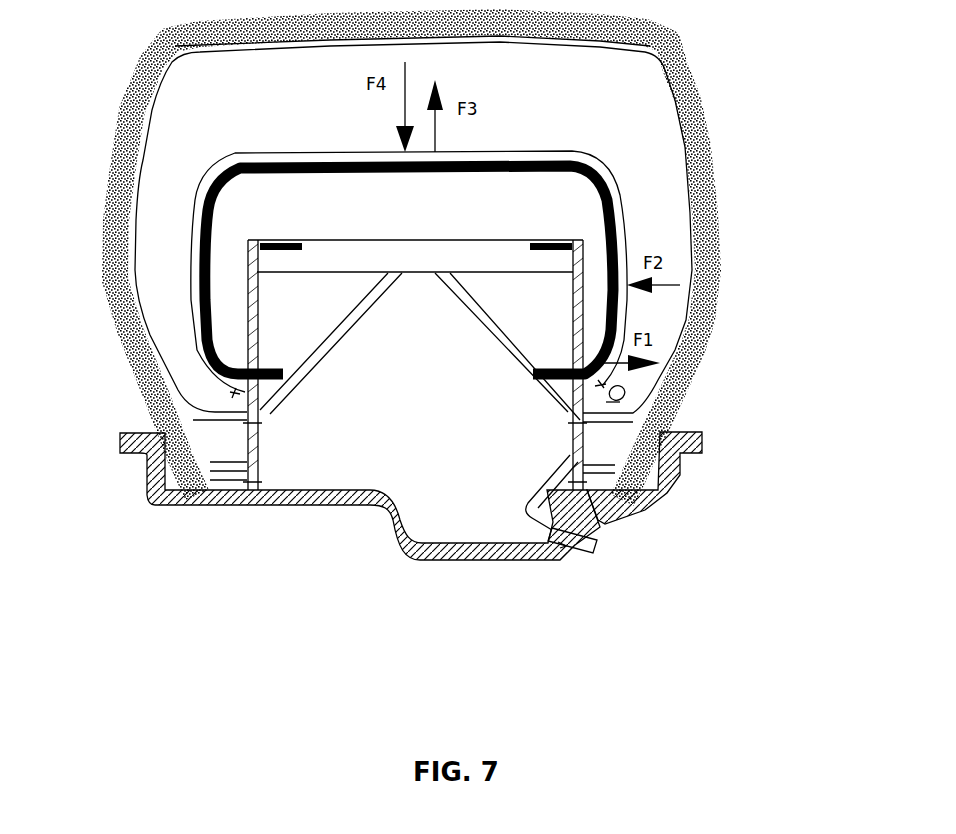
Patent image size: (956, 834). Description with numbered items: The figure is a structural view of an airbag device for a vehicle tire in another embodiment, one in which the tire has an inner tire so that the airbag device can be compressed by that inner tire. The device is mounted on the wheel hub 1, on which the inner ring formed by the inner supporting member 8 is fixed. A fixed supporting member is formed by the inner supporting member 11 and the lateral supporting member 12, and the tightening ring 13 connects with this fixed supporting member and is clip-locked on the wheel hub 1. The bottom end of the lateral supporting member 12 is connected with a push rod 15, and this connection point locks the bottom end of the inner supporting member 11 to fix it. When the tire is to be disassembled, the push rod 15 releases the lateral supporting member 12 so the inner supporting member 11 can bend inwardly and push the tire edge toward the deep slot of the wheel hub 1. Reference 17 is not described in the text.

The wheel hub 1 is at (560, 545).
The inner supporting member 8 is at (605, 212).
The inner supporting member 11 is at (585, 405).
The lateral supporting member 12 is at (590, 372).
The tightening ring 13 is at (572, 243).
The push rod 15 is at (137, 397).
The outer shell 17 is at (670, 123).